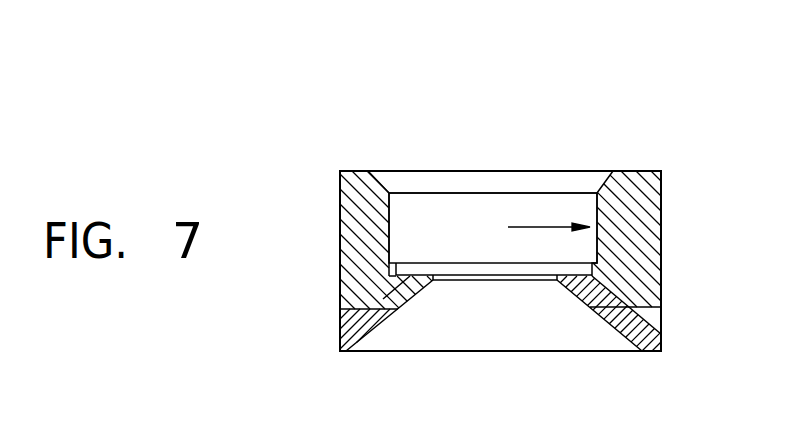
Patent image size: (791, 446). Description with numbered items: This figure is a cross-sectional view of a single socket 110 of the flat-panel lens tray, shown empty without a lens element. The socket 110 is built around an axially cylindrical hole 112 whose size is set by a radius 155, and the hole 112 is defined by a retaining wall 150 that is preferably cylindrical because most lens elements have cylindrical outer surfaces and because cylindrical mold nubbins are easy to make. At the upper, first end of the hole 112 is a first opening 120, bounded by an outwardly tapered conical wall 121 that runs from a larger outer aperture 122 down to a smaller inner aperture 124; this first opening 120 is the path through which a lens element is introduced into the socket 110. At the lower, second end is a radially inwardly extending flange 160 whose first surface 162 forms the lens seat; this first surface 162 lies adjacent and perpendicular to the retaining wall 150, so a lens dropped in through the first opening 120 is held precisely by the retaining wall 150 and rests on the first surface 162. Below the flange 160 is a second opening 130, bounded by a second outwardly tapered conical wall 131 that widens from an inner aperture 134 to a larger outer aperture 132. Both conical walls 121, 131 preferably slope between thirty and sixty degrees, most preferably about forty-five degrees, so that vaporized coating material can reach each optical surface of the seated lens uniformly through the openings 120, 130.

The socket 110 is at (618, 72).
The first opening 120 is at (391, 172).
The outer aperture of first opening 122 is at (378, 172).
The outwardly tapered conical wall of first opening 121 is at (600, 172).
The retaining wall 150 is at (407, 198).
The inner aperture of first opening 124 is at (554, 193).
The radius 155 is at (552, 227).
The inner aperture of second opening 134 is at (448, 283).
The axially cylindrical hole 112 is at (487, 256).
The first surface 162 is at (392, 285).
The radially inwardly extending flange 160 is at (583, 283).
The outwardly tapered conical wall of second opening 131 is at (403, 288).
The outer aperture of second opening 132 is at (358, 352).
The second opening 130 is at (578, 337).